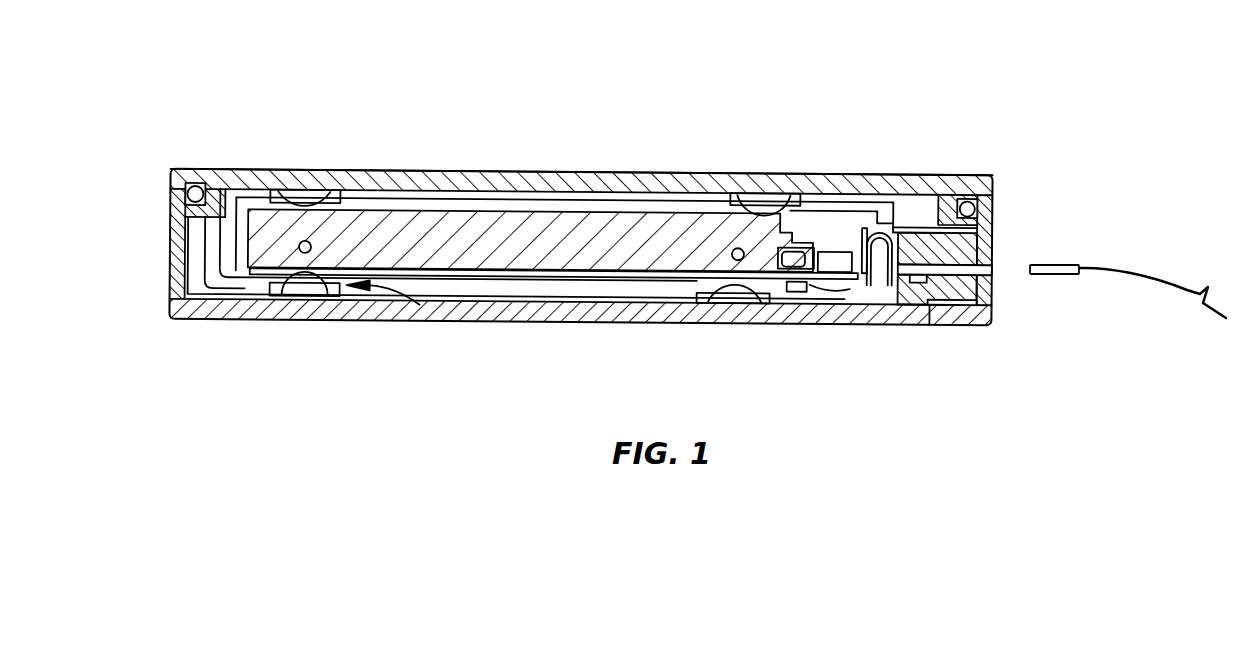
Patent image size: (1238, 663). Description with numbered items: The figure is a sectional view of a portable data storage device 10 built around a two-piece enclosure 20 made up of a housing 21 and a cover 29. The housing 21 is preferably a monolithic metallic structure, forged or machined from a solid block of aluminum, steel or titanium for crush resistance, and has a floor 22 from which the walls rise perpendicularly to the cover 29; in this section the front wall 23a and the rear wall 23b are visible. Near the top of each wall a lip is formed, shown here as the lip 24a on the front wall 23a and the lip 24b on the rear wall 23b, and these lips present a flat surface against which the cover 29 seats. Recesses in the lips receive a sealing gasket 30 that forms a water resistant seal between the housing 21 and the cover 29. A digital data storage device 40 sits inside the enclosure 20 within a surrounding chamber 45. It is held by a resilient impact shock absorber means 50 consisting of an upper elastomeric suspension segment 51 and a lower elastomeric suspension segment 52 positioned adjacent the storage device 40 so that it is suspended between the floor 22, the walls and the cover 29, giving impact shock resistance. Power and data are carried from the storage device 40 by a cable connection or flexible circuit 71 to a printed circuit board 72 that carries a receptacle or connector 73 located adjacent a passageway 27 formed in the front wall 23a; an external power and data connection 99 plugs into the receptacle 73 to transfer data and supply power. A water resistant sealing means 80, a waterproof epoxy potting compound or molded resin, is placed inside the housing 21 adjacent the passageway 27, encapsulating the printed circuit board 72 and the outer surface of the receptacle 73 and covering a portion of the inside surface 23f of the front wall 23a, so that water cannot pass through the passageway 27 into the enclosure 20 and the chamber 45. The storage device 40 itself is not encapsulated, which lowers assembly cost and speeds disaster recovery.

The portable data storage device 10 is at (716, 62).
The two-piece enclosure 20 is at (163, 154).
The housing 21 is at (178, 295).
The floor 22 is at (556, 314).
The front wall 23a is at (983, 308).
The rear wall 23b is at (181, 223).
The inside surface of front wall 23f is at (963, 312).
The lip 24a is at (950, 192).
The lip 24b is at (217, 190).
The passageway 27 is at (993, 265).
The cover 29 is at (640, 182).
The sealing gasket 30 is at (198, 190).
The digital data storage device 40 is at (422, 213).
The chamber 45 is at (487, 290).
The resilient impact shock absorber means 50 is at (420, 308).
The upper elastomeric suspension segment 51 is at (817, 206).
The lower elastomeric suspension segment 52 is at (276, 296).
The cable connection or flexible circuit 71 is at (851, 290).
The printed circuit board 72 is at (976, 290).
The receptacle or connector 73 is at (990, 237).
The water resistant sealing means 80 is at (910, 300).
The external power and data connection 99 is at (1078, 262).